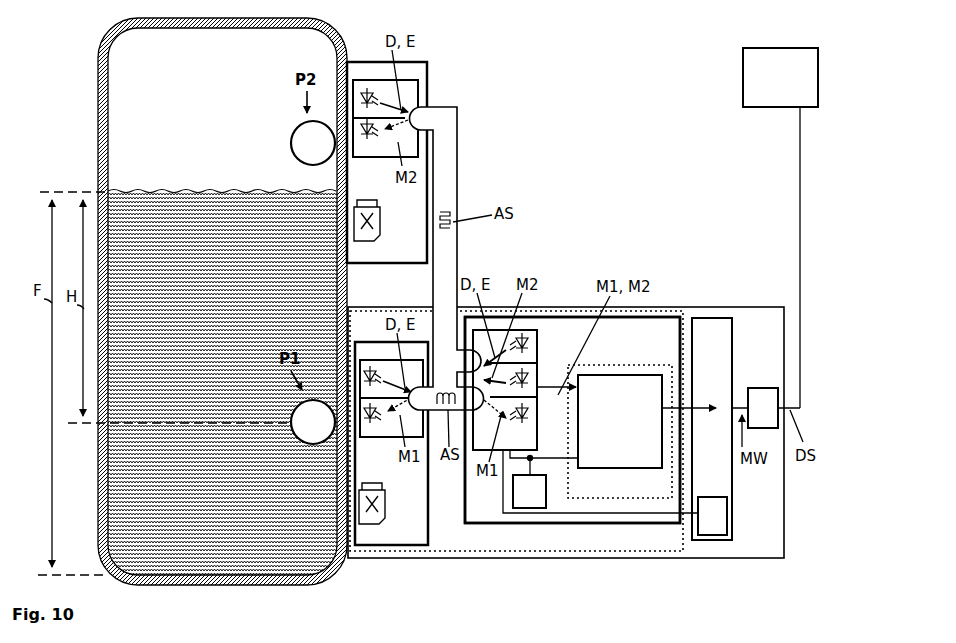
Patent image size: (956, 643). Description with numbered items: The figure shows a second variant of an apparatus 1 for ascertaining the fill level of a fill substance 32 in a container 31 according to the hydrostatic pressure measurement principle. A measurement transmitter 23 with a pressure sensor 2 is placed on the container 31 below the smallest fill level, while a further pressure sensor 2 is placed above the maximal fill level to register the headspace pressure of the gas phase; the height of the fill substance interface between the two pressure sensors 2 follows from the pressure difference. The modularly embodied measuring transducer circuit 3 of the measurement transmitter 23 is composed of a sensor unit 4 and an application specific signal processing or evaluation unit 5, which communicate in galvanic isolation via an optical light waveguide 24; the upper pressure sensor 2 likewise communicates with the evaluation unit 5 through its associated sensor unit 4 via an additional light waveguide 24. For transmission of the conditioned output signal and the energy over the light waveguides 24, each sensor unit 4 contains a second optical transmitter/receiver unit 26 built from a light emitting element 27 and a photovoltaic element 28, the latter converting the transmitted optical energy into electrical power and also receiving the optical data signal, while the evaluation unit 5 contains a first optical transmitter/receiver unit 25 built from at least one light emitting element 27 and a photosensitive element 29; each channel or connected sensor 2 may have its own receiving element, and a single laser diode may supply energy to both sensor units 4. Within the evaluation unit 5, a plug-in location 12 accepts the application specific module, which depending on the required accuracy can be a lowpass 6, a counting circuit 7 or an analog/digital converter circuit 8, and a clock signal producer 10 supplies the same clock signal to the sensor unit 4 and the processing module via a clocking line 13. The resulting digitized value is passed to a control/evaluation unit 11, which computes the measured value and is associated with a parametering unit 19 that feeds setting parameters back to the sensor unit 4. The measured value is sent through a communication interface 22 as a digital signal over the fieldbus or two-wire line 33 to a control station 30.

The apparatus 1 is at (631, 168).
The pressure sensor 2 is at (318, 151).
The measuring transducer circuit 3 is at (656, 543).
The sensor unit 4 is at (411, 250).
The application specific signal processing unit 5 is at (656, 343).
The lowpass 6 is at (620, 421).
The counting circuit 7 is at (620, 421).
The analog/digital converter circuit 8 is at (644, 434).
The clock signal producer 10 is at (539, 499).
The control/evaluation unit 11 is at (721, 362).
The plug-in location 12 is at (664, 496).
The clocking line 13 is at (533, 457).
The parametering unit 19 is at (722, 525).
The communication interface 22 is at (772, 416).
The measurement transmitter 23 is at (769, 342).
The light waveguide 24 is at (472, 150).
The first optical transmitter/receiver unit 25 is at (505, 390).
The second optical transmitter/receiver unit 26 is at (387, 148).
The light emitting element 27 is at (373, 141).
The photovoltaic element 28 is at (367, 92).
The photosensitive element 29 is at (557, 391).
The control station 30 is at (790, 85).
The container 31 is at (340, 26).
The fill substance 32 is at (211, 189).
The fieldbus 33 is at (800, 205).